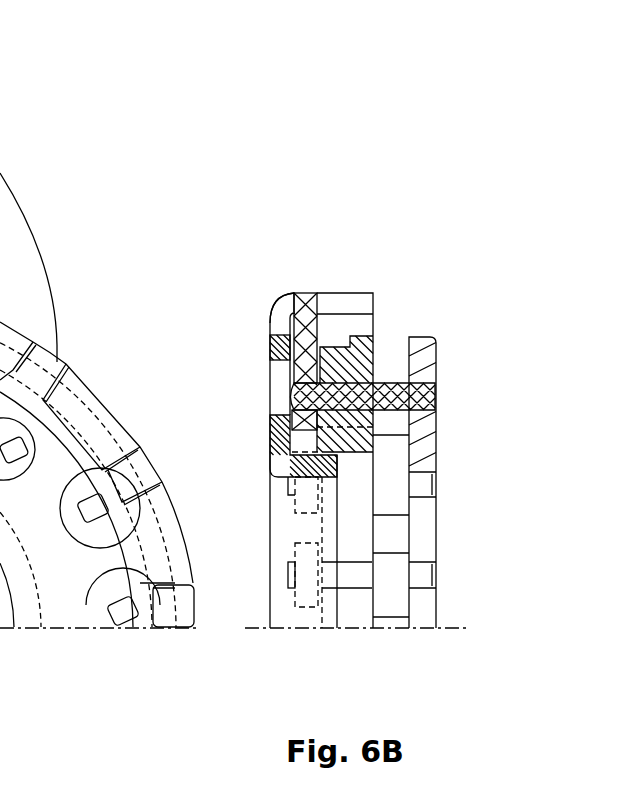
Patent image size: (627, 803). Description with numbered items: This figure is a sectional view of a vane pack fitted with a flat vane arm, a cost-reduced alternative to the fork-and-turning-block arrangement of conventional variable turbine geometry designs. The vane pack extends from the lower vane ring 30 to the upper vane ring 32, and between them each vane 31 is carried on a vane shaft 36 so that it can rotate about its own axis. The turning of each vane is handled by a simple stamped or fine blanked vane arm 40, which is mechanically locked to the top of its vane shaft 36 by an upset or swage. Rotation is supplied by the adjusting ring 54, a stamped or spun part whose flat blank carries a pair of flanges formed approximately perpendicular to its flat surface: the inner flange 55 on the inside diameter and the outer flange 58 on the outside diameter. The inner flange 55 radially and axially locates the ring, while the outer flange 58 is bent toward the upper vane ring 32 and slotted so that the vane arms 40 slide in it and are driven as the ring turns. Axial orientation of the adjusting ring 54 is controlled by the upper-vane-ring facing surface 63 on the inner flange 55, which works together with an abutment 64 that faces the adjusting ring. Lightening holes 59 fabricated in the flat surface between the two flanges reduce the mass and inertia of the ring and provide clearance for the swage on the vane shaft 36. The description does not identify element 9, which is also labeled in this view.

The rotor wheel 9 is at (58, 540).
The lower vane ring 30 is at (420, 353).
The vane 31 is at (397, 428).
The upper vane ring 32 is at (354, 363).
The vane shaft 36 is at (340, 386).
The vane arm 40 is at (307, 332).
The adjusting ring 54 is at (273, 323).
The inner flange 55 is at (331, 460).
The outer flange 58 is at (346, 307).
The lightening holes 59 is at (275, 388).
The upper-vane-ring facing surface 63 is at (272, 447).
The abutment 64 is at (345, 470).